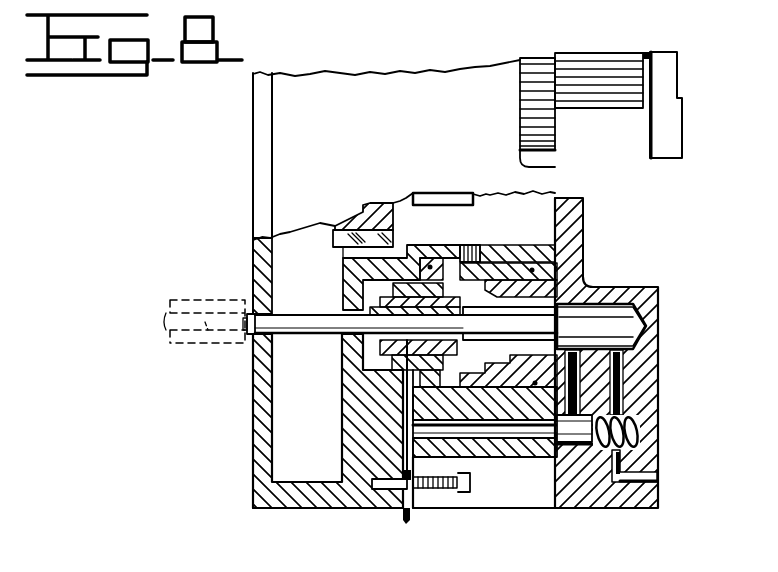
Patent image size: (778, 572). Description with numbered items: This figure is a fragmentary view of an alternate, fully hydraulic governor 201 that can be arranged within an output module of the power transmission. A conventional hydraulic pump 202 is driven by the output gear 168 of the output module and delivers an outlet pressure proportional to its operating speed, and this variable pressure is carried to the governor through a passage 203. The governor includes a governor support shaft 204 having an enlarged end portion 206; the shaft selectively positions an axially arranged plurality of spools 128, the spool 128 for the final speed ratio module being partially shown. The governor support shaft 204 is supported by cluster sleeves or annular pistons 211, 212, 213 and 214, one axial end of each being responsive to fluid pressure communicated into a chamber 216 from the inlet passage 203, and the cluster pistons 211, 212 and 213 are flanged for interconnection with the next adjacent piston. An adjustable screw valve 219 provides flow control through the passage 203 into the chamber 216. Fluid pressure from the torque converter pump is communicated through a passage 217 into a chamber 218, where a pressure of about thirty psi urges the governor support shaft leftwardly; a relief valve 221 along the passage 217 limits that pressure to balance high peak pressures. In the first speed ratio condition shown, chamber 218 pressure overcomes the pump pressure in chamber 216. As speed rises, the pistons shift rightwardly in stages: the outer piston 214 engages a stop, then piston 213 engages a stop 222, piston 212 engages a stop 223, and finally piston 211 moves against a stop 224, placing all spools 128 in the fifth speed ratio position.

The spool 128 is at (203, 327).
The output gear 168 is at (346, 213).
The hydraulic governor 201 is at (330, 519).
The hydraulic pump 202 is at (424, 190).
The passage 203 is at (410, 490).
The governor support shaft 204 is at (333, 318).
The enlarged end portion 206 is at (583, 285).
The cluster piston 211 is at (252, 297).
The cluster piston 212 is at (343, 285).
The cluster piston 213 is at (345, 260).
The outer cluster piston 214 is at (367, 210).
The chamber 216 is at (392, 357).
The passage 217 is at (622, 392).
The chamber 218 is at (605, 340).
The adjustable screw valve 219 is at (463, 492).
The relief valve 221 is at (447, 264).
The stop 222 is at (478, 244).
The stop 223 is at (517, 245).
The stop 224 is at (575, 262).